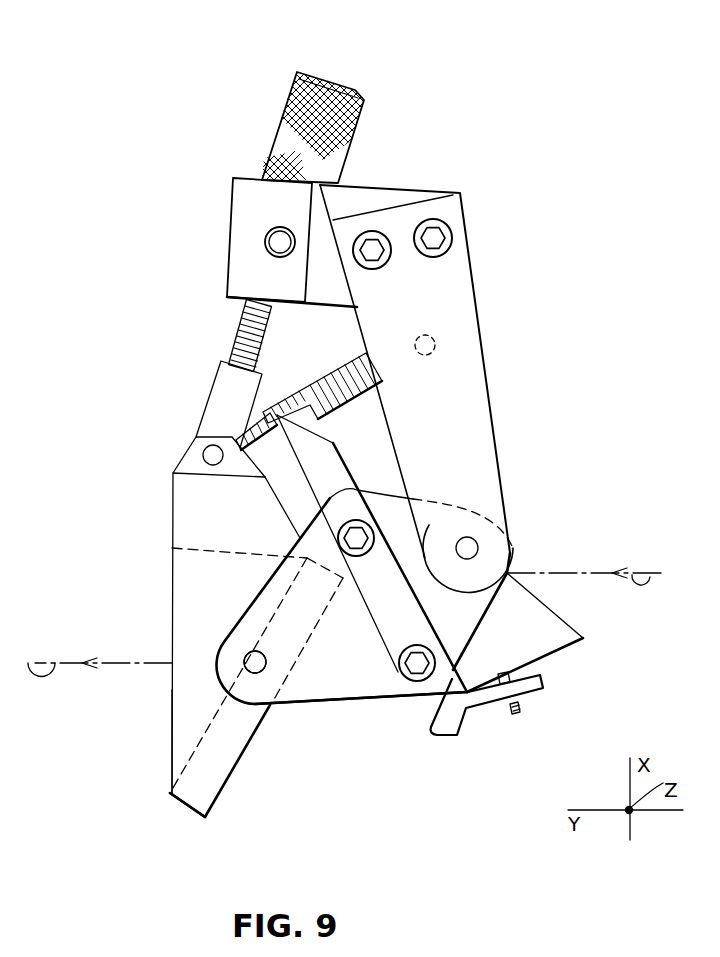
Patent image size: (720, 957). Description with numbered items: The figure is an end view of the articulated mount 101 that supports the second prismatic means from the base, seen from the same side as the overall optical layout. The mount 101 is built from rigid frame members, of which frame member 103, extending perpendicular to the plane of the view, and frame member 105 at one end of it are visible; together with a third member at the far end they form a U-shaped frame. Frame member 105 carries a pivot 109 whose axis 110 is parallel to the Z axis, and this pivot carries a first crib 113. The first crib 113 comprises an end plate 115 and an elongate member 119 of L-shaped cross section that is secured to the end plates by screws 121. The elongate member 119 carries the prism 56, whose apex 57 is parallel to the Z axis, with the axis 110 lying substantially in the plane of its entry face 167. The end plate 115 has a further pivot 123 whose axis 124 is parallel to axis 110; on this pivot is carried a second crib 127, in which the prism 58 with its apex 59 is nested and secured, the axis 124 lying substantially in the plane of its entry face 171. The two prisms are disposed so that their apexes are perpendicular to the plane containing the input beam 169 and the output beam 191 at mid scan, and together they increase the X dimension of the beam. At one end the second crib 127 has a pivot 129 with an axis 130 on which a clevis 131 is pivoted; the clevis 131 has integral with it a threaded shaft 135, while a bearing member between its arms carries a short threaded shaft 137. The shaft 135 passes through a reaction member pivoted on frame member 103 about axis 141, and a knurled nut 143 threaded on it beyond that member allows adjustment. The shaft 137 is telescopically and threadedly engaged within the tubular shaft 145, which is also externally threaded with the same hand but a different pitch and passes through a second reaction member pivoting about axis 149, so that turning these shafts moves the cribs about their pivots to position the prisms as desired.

The prism 56 is at (582, 640).
The apex 57 is at (372, 490).
The prism 58 is at (190, 707).
The apex 59 is at (170, 793).
The articulated mount 101 is at (486, 208).
The frame member 103 is at (242, 203).
The frame member 105 is at (460, 295).
The pivot 109 is at (487, 528).
The axis 110 is at (466, 538).
The first crib 113 is at (382, 719).
The end plate 115 is at (332, 693).
The elongate member 119 is at (450, 720).
The screws 121 is at (400, 658).
The pivot 123 is at (246, 656).
The axis 124 is at (262, 668).
The second crib 127 is at (198, 577).
The pivot 129 is at (197, 450).
The axis 130 is at (203, 453).
The clevis 131 is at (223, 385).
The threaded shaft 135 is at (240, 322).
The short threaded shaft 137 is at (267, 415).
The axis 141 is at (275, 241).
The knurled nut 143 is at (283, 115).
The tubular shaft 145 is at (322, 376).
The axis 149 is at (436, 343).
The entry face 167 is at (562, 617).
The input beam 169 is at (637, 570).
The entry face 171 is at (192, 753).
The output beam 191 is at (30, 655).